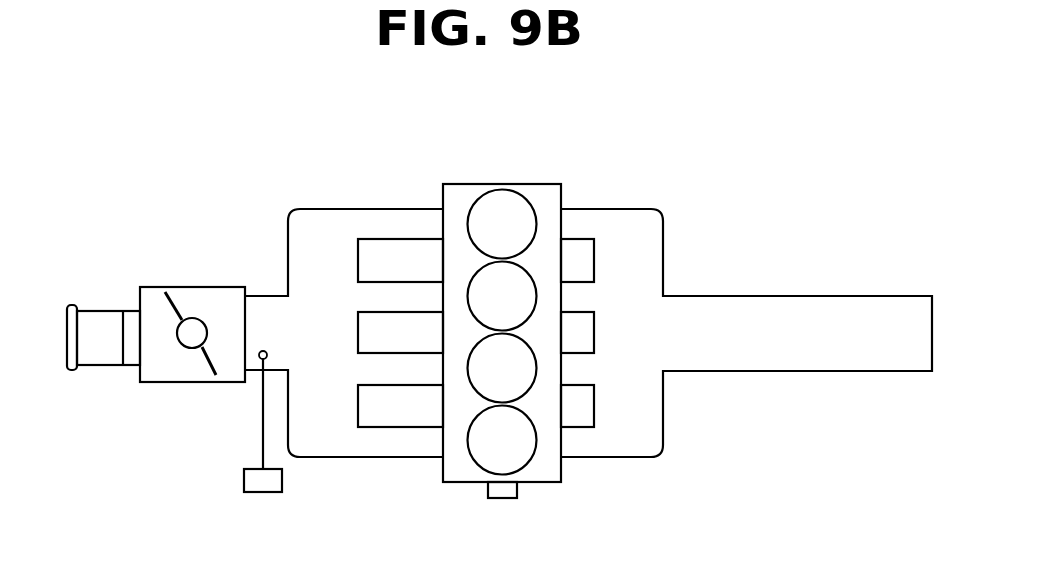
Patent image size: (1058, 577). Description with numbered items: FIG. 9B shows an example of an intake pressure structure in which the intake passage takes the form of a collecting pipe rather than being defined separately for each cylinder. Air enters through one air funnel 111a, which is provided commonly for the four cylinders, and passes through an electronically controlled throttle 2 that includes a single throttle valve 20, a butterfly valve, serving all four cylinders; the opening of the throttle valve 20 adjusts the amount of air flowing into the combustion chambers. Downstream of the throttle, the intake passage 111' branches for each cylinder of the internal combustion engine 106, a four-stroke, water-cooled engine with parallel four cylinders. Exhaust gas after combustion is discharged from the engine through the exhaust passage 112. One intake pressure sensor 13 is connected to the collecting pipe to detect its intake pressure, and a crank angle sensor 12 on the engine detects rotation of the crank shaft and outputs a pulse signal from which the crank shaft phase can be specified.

The air funnel 111a is at (100, 310).
The throttle 2 is at (191, 266).
The throttle valve 20 is at (200, 353).
The intake passage 111' is at (344, 269).
The internal combustion engine 106 is at (535, 165).
The crank angle sensor 12 is at (520, 492).
The exhaust passage 112 is at (689, 295).
The intake pressure sensor 13 is at (268, 493).